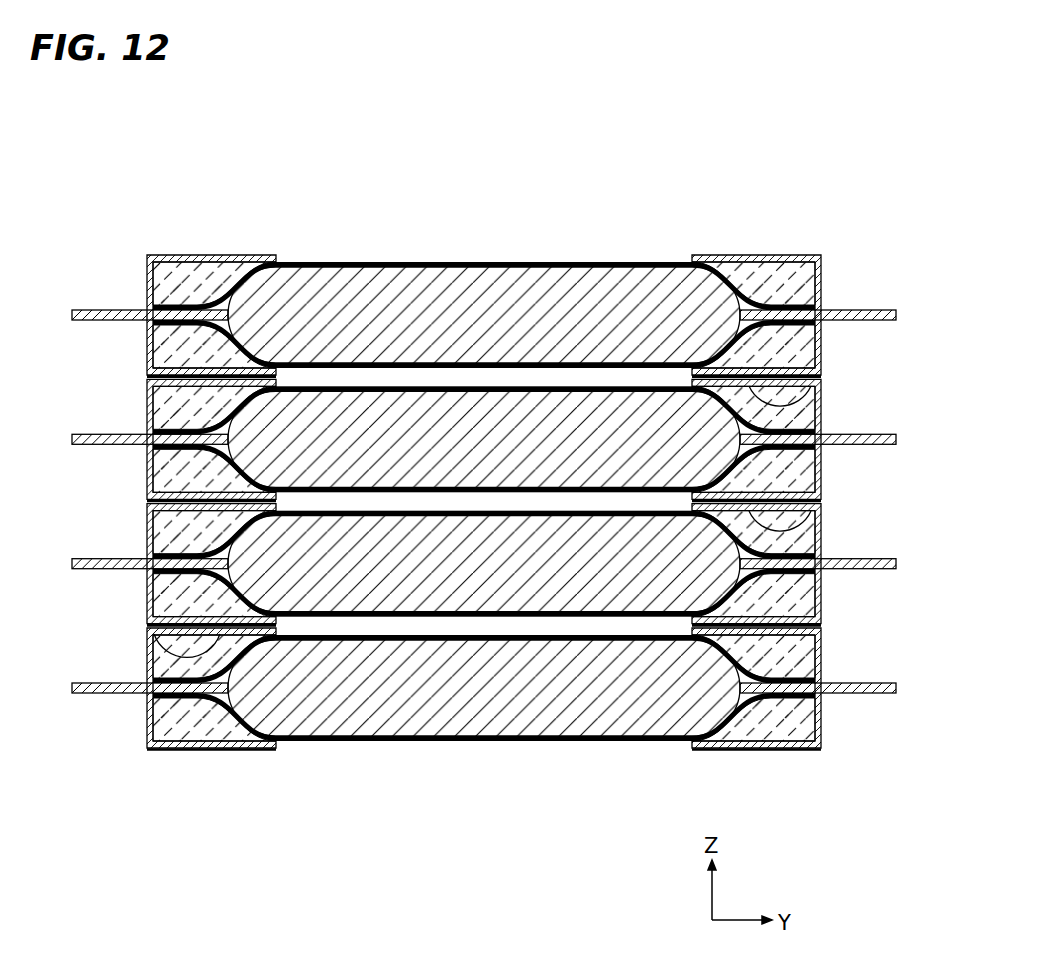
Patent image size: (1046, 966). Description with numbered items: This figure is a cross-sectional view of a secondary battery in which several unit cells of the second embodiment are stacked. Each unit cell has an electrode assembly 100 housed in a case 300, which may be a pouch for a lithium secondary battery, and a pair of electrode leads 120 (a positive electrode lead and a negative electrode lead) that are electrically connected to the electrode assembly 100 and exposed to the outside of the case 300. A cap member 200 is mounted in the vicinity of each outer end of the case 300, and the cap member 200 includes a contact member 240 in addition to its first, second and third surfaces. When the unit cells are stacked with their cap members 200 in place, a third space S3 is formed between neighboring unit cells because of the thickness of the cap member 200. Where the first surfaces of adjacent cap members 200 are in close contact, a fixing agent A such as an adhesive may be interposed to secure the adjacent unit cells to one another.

The electrode assembly 100 is at (340, 314).
The electrode leads 120 is at (96, 310).
The cap member 200 is at (222, 254).
The contact member 240 is at (801, 268).
The case 300 is at (595, 261).
The third space S3 is at (483, 378).
The fixing agent A is at (822, 385).